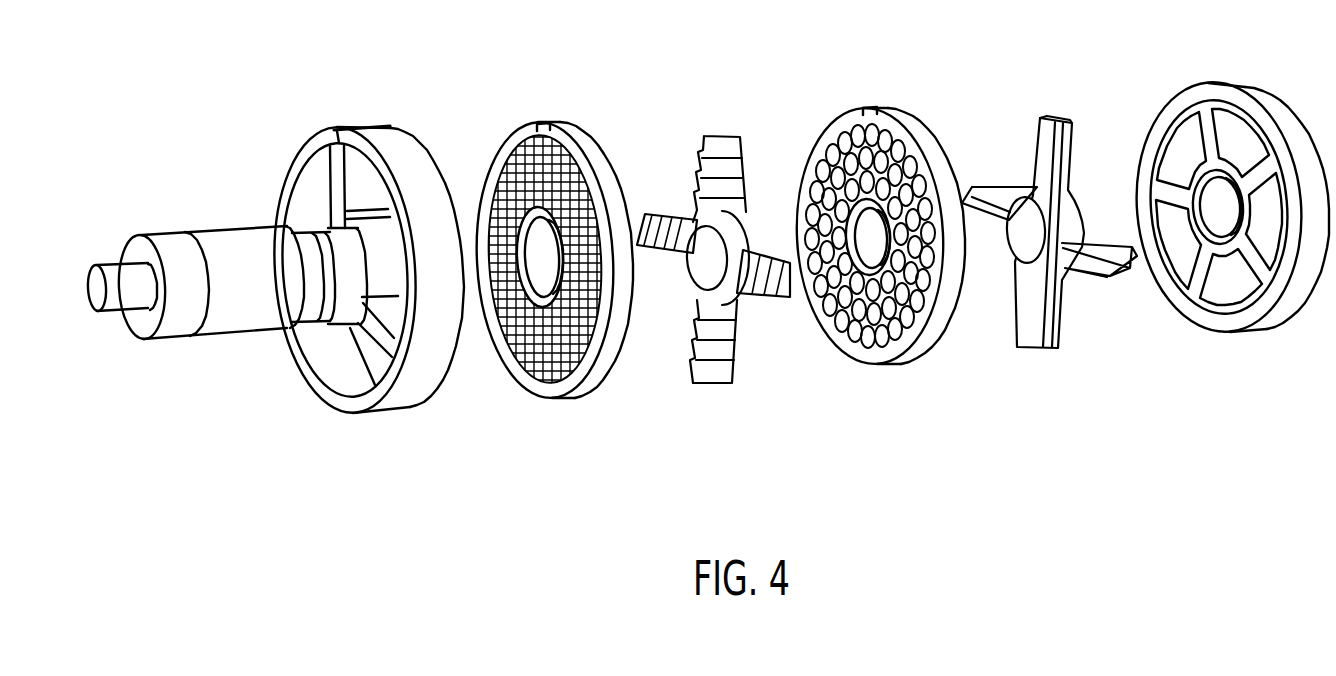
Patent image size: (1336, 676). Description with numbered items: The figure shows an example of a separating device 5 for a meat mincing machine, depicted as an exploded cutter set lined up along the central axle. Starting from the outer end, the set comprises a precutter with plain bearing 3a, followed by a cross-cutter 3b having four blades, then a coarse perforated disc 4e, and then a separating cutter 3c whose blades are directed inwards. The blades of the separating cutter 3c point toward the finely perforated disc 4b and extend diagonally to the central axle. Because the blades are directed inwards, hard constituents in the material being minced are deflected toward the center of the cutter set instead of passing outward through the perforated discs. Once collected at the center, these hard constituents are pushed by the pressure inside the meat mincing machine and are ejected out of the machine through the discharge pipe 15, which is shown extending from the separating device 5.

The discharge pipe 15 is at (201, 227).
The separating device 5 is at (397, 140).
The finely perforated disc 4b is at (575, 120).
The separating cutter 3c is at (728, 136).
The perforated disc 4e is at (893, 110).
The cross-cutter 3b is at (1063, 116).
The precutter with plain bearing 3a is at (1273, 91).